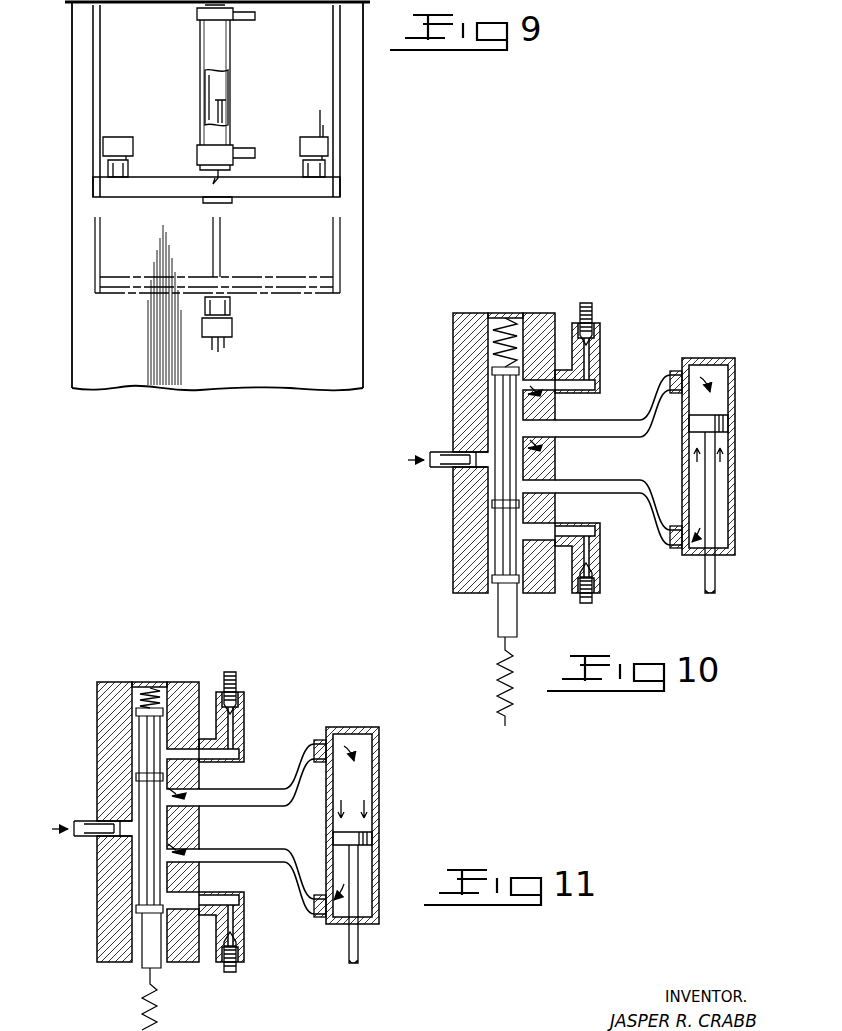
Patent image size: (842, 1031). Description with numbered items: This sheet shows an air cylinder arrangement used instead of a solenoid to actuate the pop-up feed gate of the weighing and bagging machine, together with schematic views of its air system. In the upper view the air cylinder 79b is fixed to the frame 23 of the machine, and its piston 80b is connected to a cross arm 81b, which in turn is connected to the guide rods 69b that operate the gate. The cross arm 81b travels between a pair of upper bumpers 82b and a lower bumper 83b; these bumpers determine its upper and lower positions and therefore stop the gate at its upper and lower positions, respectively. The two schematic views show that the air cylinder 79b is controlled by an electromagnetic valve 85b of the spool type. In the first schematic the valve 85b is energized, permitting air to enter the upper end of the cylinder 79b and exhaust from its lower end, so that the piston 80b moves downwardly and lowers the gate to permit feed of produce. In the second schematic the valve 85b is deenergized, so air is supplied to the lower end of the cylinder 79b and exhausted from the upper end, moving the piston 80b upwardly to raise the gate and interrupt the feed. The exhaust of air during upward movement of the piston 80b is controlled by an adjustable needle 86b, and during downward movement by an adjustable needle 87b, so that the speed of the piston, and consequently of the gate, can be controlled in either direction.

In FIG. 9, the housing frame 23 is at (68, 108).
In FIG. 9, the guide rods 69b is at (95, 31).
In FIG. 9, the air cylinder 79b is at (205, 47).
In FIG. 10, the air cylinder 79b is at (724, 362).
In FIG. 11, the air cylinder 79b is at (336, 727).
In FIG. 9, the piston 80b is at (212, 92).
In FIG. 10, the piston 80b is at (730, 426).
In FIG. 11, the piston 80b is at (374, 838).
In FIG. 9, the cross arm 81b is at (170, 194).
In FIG. 9, the upper bumpers 82b is at (129, 168).
In FIG. 9, the lower bumper 83b is at (228, 305).
In FIG. 10, the electromagnetic valve 85b is at (466, 521).
In FIG. 11, the electromagnetic valve 85b is at (104, 720).
In FIG. 10, the adjustable needle 86b is at (595, 325).
In FIG. 11, the adjustable needle 86b is at (240, 694).
In FIG. 10, the adjustable needle 87b is at (598, 588).
In FIG. 11, the adjustable needle 87b is at (243, 955).